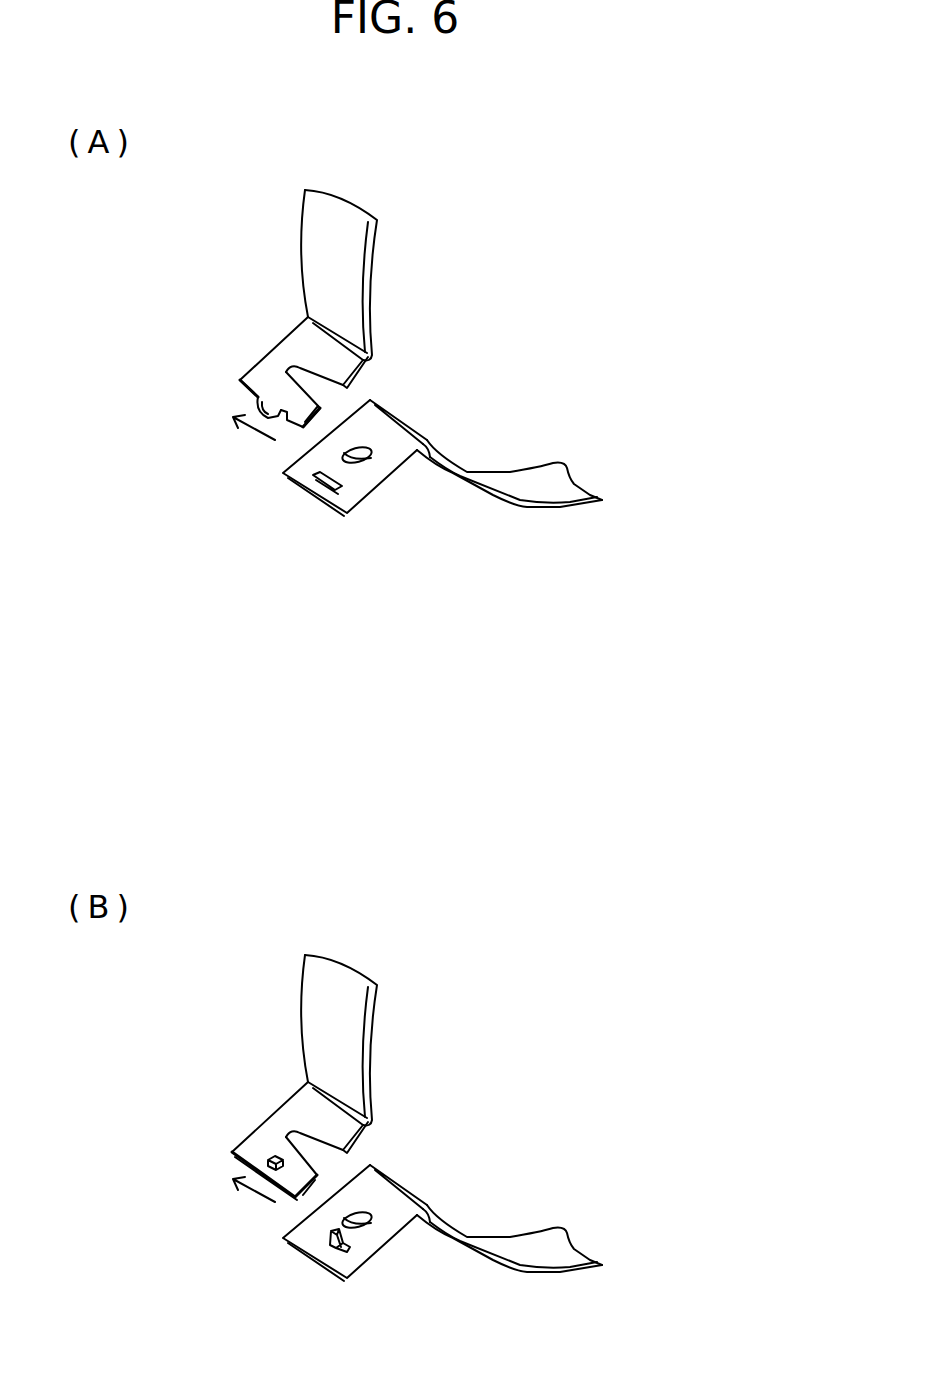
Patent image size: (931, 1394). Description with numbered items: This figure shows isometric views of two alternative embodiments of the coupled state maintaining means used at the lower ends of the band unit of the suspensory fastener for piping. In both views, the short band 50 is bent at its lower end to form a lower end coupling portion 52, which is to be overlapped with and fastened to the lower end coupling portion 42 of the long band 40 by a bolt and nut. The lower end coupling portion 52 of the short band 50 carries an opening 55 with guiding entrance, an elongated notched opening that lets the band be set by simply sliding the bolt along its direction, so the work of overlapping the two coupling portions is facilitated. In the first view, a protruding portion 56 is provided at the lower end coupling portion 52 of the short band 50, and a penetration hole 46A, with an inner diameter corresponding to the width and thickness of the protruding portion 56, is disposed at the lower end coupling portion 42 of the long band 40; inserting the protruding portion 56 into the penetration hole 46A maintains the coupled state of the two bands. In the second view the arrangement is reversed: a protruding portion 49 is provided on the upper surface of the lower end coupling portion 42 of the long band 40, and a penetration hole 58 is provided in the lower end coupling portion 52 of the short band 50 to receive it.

The long band 40 is at (538, 436).
The lower end coupling portion 42 is at (365, 478).
The penetration hole 46A is at (323, 485).
The protruding portion 49 is at (323, 1242).
The short band 50 is at (395, 288).
The lower end coupling portion 52 is at (305, 335).
The opening with guiding entrance 55 is at (290, 370).
The protruding portion 56 is at (260, 405).
The penetration hole 58 is at (268, 1160).